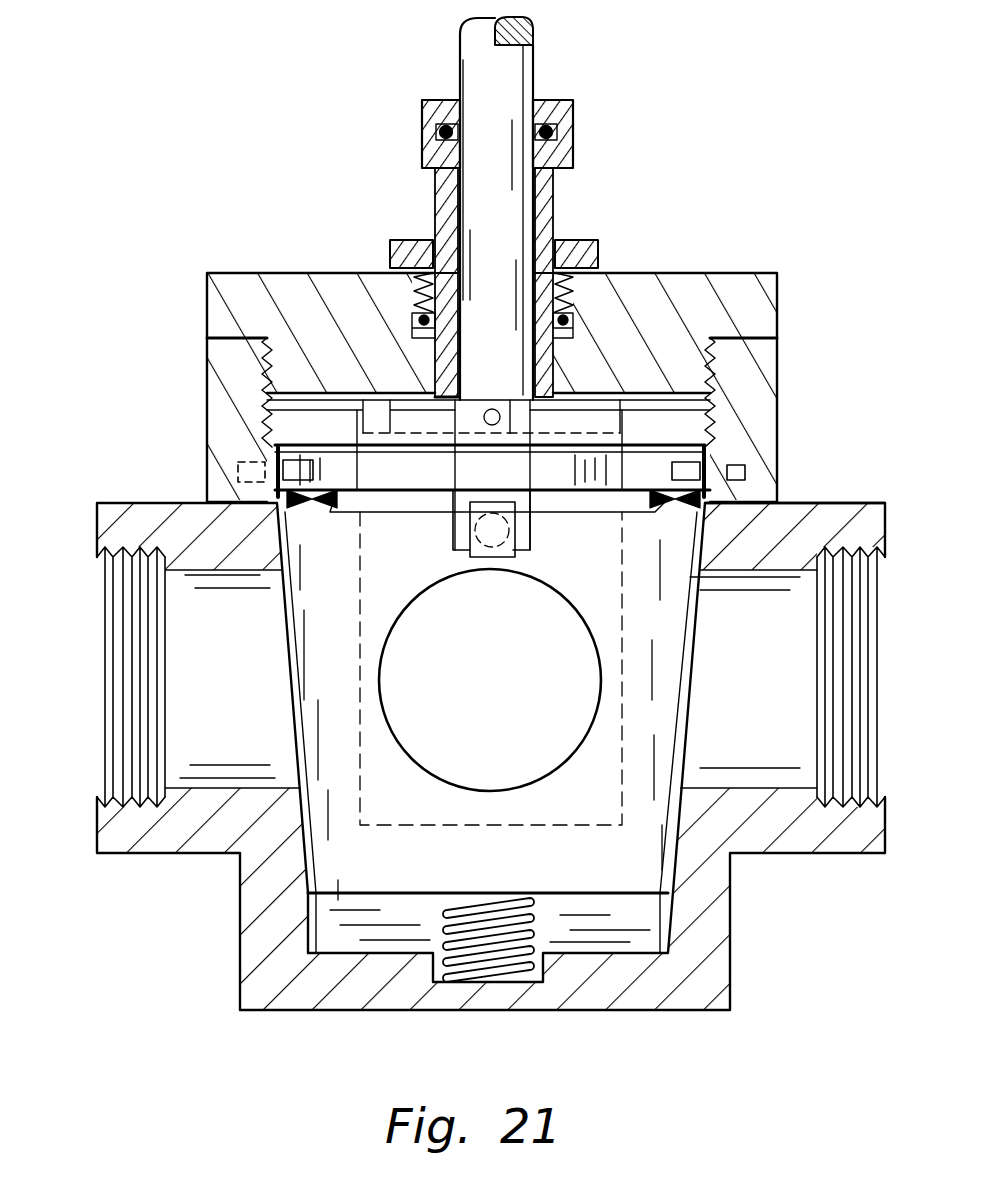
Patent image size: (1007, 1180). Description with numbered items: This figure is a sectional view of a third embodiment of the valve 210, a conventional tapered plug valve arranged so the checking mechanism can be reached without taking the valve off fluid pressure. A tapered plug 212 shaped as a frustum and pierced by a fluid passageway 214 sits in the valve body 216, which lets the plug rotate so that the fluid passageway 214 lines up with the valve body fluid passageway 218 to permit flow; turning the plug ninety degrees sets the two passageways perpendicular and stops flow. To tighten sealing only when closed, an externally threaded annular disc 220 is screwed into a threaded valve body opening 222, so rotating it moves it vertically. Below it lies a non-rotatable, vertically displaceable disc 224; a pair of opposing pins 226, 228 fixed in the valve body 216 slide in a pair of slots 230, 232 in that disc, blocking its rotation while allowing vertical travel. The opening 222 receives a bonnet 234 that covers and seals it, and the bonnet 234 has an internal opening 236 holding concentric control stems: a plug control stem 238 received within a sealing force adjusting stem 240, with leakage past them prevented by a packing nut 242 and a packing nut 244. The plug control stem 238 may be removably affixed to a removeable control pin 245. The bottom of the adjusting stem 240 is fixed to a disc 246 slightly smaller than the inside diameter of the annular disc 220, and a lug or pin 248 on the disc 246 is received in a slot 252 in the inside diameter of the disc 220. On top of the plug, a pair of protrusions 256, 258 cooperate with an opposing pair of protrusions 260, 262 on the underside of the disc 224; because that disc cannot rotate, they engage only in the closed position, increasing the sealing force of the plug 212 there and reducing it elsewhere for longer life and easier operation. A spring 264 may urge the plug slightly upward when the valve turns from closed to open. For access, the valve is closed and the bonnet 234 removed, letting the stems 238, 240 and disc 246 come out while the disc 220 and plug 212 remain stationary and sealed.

The valve 210 is at (238, 228).
The tapered plug 212 is at (323, 827).
The fluid passageway 214 is at (403, 757).
The valve body 216 is at (230, 360).
The valve body fluid passageway 218 is at (220, 723).
The externally threaded annular disc 220 is at (337, 422).
The threaded valve body opening 222 is at (263, 340).
The non-rotatable vertically displaceable disc 224 is at (347, 468).
The pin 226 is at (302, 470).
The pin 228 is at (747, 477).
The slot 230 is at (283, 482).
The slot 232 is at (712, 445).
The bonnet 234 is at (762, 307).
The internal opening 236 is at (556, 358).
The plug control stem 238 is at (500, 92).
The sealing force adjusting stem 240 is at (555, 210).
The packing nut 242 is at (558, 100).
The packing nut 244 is at (560, 243).
The removeable control pin 245 is at (485, 550).
The disc 246 is at (768, 345).
The lug or pin 248 is at (491, 409).
The slot 252 is at (487, 437).
The protrusion 256 is at (287, 512).
The protrusion 258 is at (665, 512).
The protrusion 260 is at (287, 490).
The protrusion 262 is at (720, 512).
The spring 264 is at (502, 955).